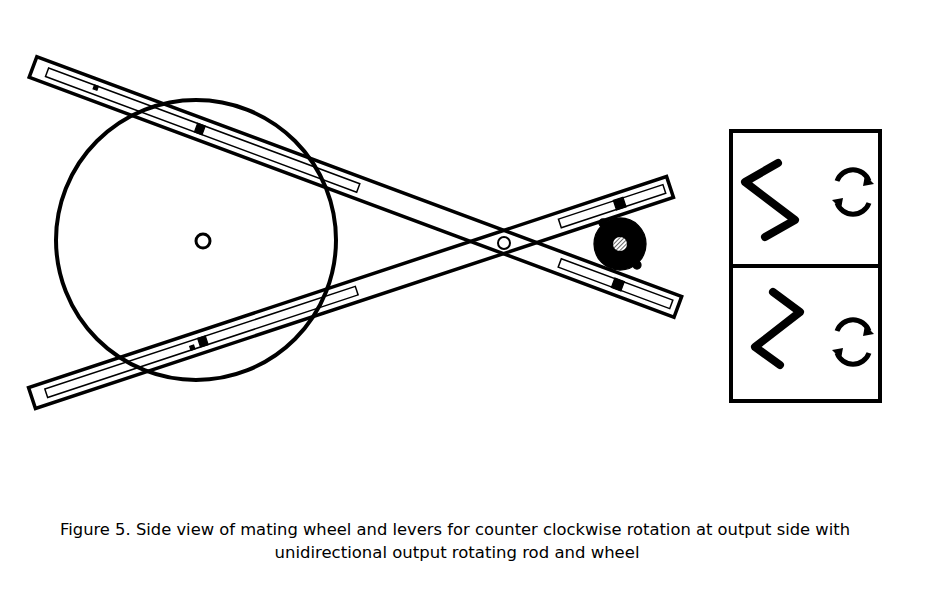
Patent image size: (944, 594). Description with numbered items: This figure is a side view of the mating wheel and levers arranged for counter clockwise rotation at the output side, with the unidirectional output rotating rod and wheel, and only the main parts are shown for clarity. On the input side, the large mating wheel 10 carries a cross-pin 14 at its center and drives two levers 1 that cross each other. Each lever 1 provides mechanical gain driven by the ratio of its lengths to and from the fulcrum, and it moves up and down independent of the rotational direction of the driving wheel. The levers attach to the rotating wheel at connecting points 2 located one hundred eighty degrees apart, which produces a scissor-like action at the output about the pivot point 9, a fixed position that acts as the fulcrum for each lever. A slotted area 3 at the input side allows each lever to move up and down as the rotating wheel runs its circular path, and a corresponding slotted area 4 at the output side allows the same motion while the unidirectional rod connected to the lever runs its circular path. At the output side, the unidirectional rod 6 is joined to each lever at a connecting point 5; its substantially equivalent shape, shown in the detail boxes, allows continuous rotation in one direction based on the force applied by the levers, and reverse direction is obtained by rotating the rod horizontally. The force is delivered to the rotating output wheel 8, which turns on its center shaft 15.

The lever 1 is at (350, 167).
The connecting point for lever and rotating wheel 2 is at (197, 135).
The slotted area for lever movement at the input side 3 is at (108, 86).
The slotted area for lever movement at the output side 4 is at (575, 210).
The connecting point for unidirectional rod and lever 5 is at (623, 200).
The unidirectional rod 6 is at (650, 263).
The rotating output wheel 8 is at (644, 228).
The pivot point 9 is at (500, 253).
The mating wheel 10 is at (105, 233).
The cross-pin 14 is at (203, 251).
The center shaft 15 is at (648, 244).